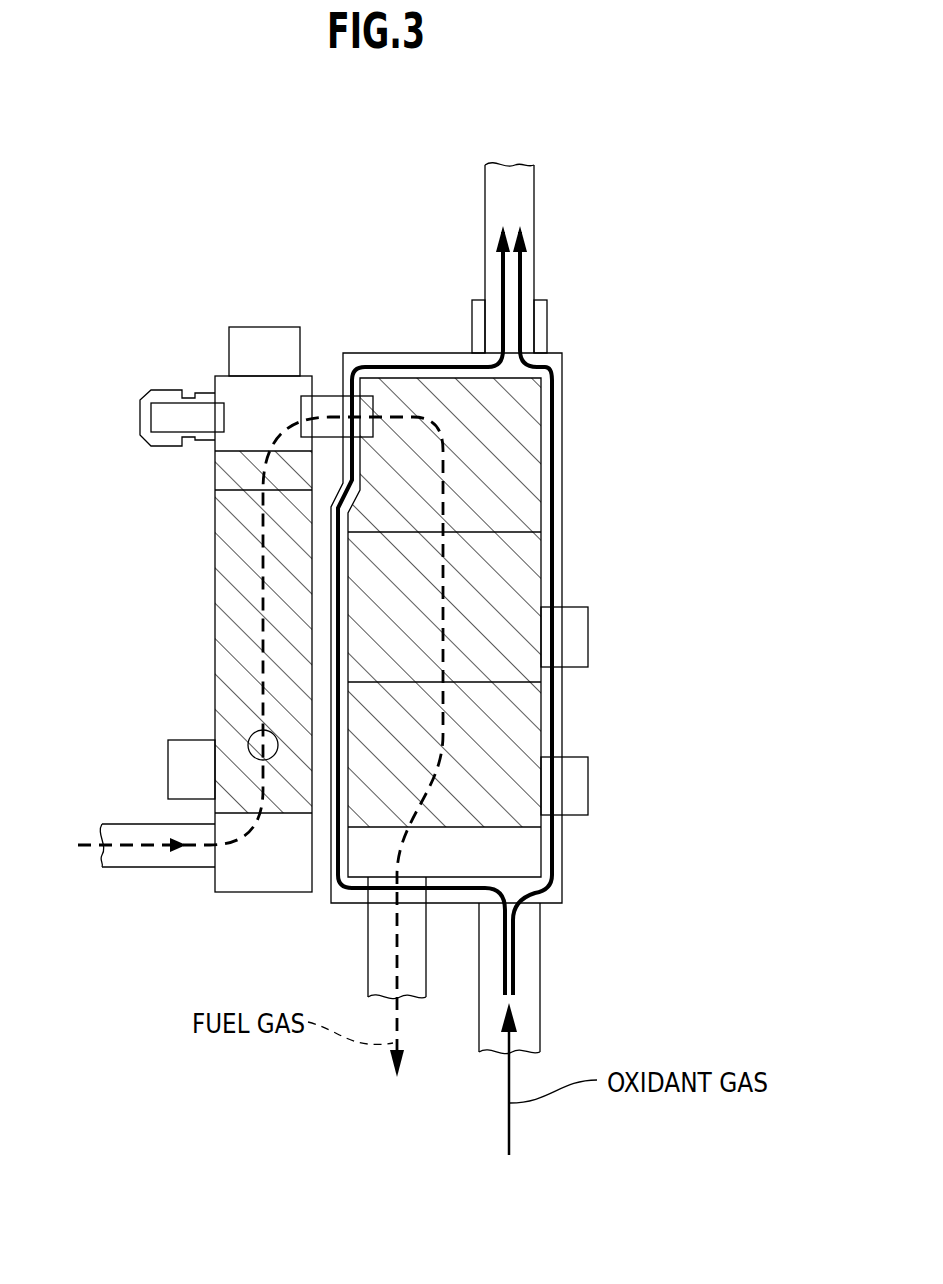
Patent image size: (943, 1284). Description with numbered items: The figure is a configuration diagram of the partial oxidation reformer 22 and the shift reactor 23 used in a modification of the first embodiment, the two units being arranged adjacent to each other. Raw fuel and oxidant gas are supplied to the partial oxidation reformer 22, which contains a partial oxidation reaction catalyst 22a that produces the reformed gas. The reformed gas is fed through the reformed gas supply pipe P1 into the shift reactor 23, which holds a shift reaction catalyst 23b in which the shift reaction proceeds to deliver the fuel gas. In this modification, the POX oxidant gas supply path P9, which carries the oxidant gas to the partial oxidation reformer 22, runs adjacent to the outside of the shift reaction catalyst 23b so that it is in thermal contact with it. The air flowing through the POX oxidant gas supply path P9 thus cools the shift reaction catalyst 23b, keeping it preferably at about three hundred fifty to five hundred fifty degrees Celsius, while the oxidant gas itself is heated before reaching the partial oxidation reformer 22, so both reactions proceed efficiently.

The partial oxidation reformer 22 is at (215, 558).
The partial oxidation reaction catalyst 22a is at (252, 625).
The shift reactor 23 is at (563, 417).
The shift reaction catalyst 23b is at (517, 570).
The reformed gas supply pipe P1 is at (328, 405).
The POX oxidant gas supply path P9 is at (402, 360).